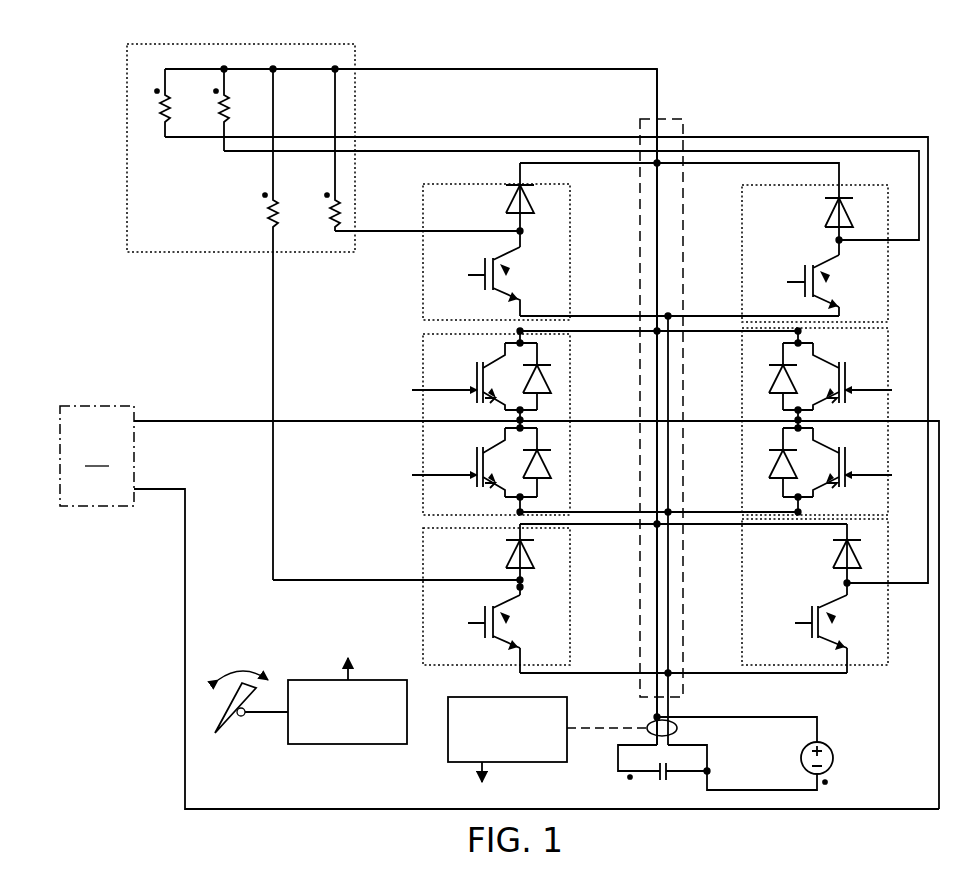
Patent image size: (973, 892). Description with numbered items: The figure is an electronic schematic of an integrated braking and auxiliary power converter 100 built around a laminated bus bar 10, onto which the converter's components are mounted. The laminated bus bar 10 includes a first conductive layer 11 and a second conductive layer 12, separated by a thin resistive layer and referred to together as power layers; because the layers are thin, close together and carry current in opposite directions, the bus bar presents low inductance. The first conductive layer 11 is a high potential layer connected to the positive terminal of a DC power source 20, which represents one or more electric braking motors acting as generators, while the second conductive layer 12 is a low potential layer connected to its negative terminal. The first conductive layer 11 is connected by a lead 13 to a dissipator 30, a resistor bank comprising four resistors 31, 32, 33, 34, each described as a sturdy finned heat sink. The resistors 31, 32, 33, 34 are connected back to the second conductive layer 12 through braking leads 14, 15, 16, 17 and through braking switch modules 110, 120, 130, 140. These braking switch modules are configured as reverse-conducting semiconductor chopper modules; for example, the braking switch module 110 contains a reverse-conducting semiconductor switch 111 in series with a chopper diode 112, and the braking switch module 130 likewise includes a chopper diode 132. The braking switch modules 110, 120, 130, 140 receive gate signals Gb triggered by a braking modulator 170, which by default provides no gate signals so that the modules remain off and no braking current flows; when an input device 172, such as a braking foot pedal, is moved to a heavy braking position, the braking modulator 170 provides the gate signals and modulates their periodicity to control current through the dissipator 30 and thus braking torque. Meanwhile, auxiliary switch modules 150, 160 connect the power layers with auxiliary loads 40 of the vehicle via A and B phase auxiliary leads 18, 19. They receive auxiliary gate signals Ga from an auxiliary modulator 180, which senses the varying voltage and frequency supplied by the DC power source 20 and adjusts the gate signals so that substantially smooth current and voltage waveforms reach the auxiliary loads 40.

The integrated braking and auxiliary power converter 100 is at (830, 56).
The laminated bus bar 10 is at (686, 108).
The first conductive layer 11 is at (658, 247).
The second conductive layer 12 is at (670, 316).
The lead 13 is at (440, 68).
The braking lead 14 is at (365, 228).
The braking lead 15 is at (273, 512).
The braking lead 16 is at (407, 153).
The braking lead 17 is at (395, 136).
The A phase auxiliary lead 18 is at (158, 426).
The B phase auxiliary lead 19 is at (153, 491).
The DC power source 20 is at (834, 753).
The dissipator 30 is at (127, 65).
The resistor 31 is at (338, 228).
The resistor 32 is at (268, 228).
The resistor 33 is at (218, 122).
The resistor 34 is at (160, 122).
The auxiliary loads 40 is at (97, 456).
The braking switch module 110 is at (553, 184).
The reverse-conducting semiconductor switch 111 is at (522, 276).
The chopper diode 112 is at (527, 213).
The braking switch module 120 is at (574, 587).
The braking switch module 130 is at (765, 185).
The chopper diode 132 is at (830, 228).
The braking switch module 140 is at (730, 590).
The auxiliary switch module 150 is at (574, 405).
The auxiliary switch module 160 is at (730, 405).
The braking modulator 170 is at (345, 744).
The input device 172 is at (258, 683).
The auxiliary modulator 180 is at (545, 762).